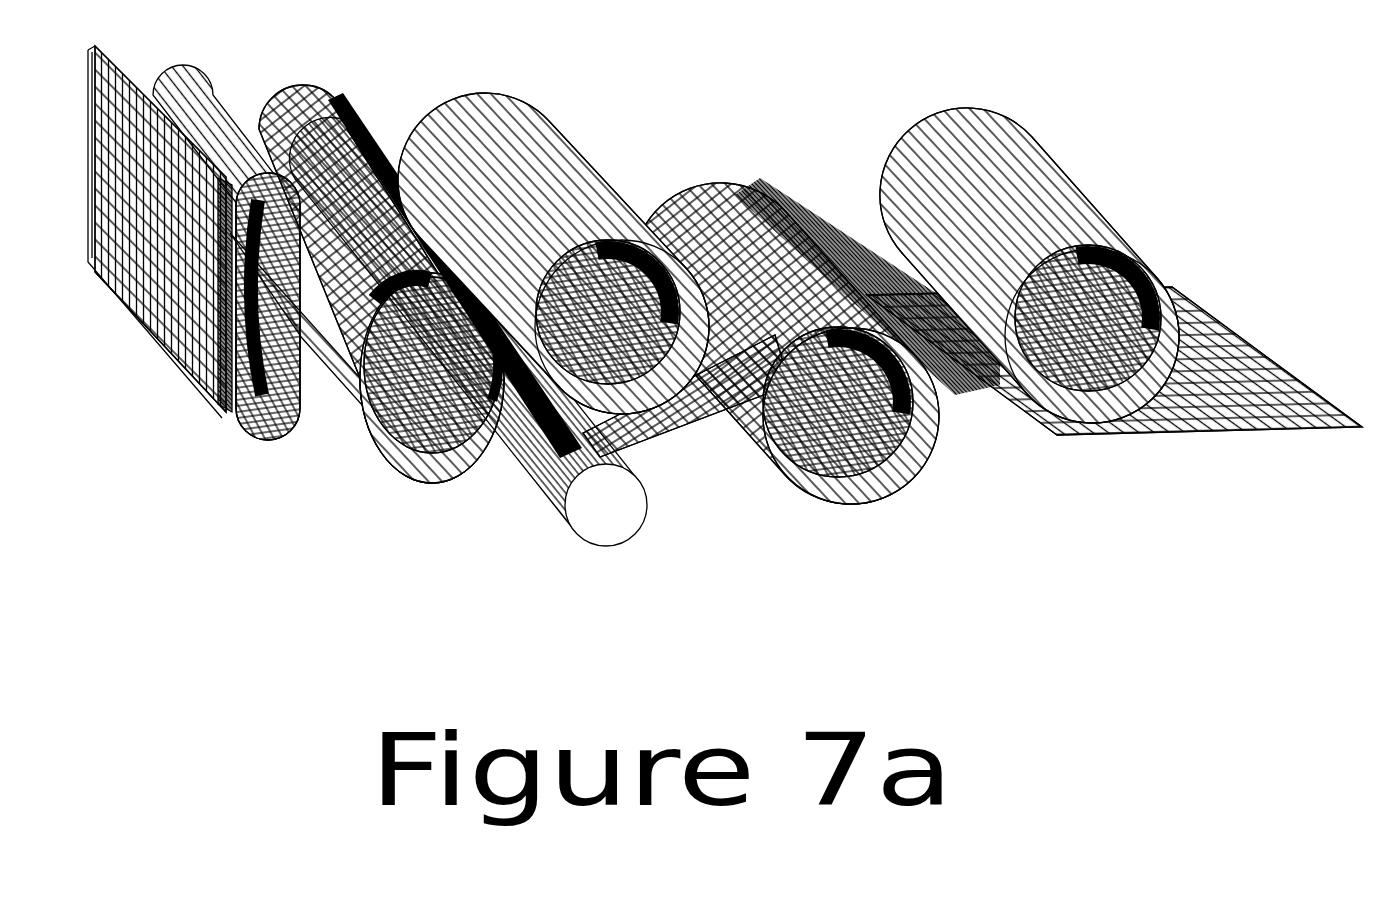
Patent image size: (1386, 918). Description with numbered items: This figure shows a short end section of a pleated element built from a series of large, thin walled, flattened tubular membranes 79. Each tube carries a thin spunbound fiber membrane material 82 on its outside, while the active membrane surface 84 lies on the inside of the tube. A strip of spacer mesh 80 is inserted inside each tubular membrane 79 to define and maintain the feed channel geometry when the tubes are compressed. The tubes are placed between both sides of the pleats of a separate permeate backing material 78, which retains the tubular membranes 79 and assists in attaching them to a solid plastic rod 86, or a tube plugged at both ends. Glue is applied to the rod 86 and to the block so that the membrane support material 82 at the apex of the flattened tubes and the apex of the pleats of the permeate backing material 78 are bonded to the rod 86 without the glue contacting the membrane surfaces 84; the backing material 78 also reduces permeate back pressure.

The permeate backing material 78 is at (1227, 447).
The tubular membrane 79 is at (1122, 257).
The spacer mesh 80 is at (866, 462).
The spunbound fiber membrane material 82 is at (548, 163).
The membrane surface 84 is at (433, 483).
The solid plastic rod 86 is at (548, 517).